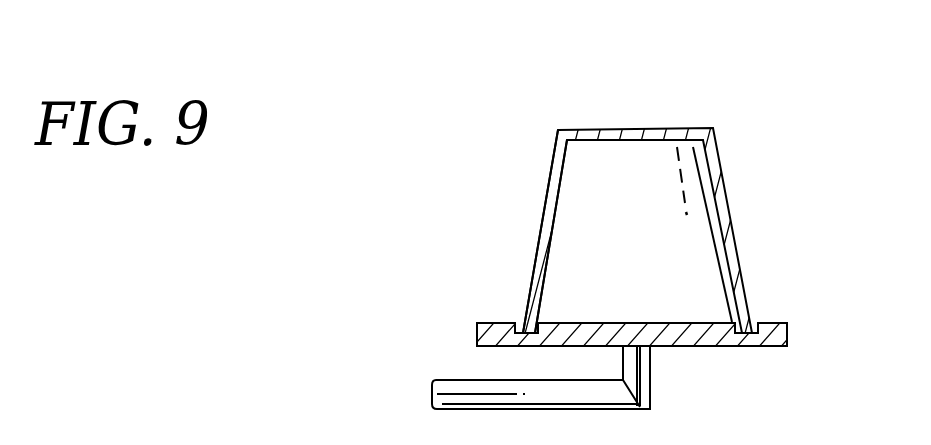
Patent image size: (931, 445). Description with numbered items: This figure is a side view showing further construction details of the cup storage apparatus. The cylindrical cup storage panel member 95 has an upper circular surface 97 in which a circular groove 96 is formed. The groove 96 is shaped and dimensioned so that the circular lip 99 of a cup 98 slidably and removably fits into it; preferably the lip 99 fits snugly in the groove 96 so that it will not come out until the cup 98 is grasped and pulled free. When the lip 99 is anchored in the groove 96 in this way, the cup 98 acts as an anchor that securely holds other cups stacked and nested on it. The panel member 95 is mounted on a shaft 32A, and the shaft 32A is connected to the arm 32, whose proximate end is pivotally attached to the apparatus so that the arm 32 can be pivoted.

The cup 98 is at (660, 108).
The upper circular surface 97 is at (680, 322).
The circular lip 99 is at (523, 330).
The circular groove 96 is at (555, 323).
The cylindrical cup storage panel member 95 is at (686, 354).
The arm 32 is at (433, 380).
The shaft 32A is at (623, 360).